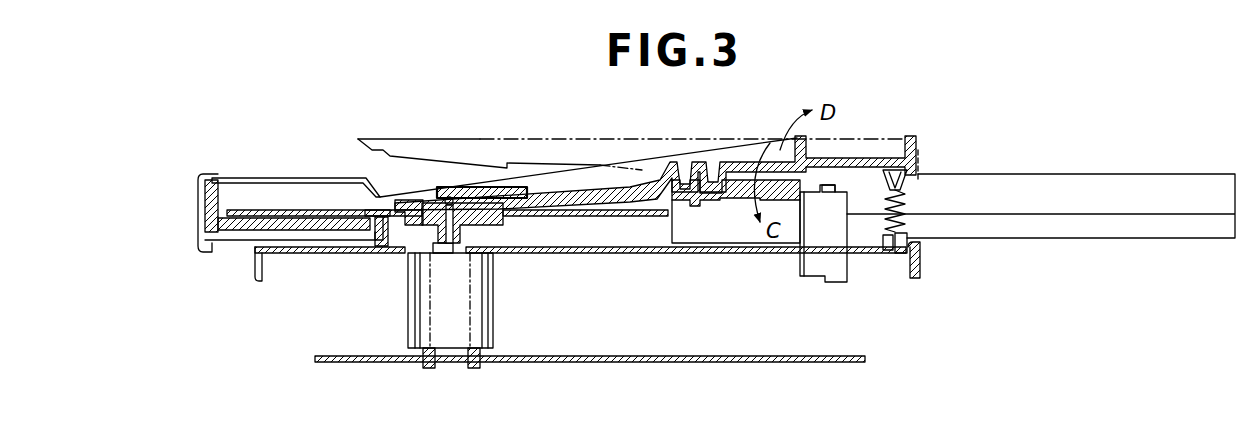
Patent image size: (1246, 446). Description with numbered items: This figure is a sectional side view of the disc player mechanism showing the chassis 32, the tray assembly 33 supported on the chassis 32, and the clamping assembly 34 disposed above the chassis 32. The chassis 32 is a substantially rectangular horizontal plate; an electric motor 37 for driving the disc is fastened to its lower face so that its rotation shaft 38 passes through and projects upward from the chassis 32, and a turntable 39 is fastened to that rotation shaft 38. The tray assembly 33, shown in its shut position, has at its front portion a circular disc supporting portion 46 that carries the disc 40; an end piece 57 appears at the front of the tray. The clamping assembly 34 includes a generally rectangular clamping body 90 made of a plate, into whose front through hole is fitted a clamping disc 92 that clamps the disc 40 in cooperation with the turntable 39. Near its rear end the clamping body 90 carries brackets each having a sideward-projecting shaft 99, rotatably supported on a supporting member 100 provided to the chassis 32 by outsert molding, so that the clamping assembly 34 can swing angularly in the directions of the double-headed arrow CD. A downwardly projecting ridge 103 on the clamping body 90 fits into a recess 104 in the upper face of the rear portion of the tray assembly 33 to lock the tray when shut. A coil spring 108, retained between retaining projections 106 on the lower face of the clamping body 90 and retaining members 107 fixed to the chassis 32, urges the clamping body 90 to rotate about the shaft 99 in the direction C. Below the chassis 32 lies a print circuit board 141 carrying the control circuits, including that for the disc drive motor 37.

The chassis 32 is at (336, 253).
The tray assembly 33 is at (251, 175).
The clamping assembly 34 is at (748, 136).
The electric motor 37 is at (492, 288).
The rotation shaft 38 is at (462, 228).
The turntable 39 is at (416, 218).
The disc 40 is at (312, 212).
The disc supporting portion 46 is at (274, 217).
The end cap 57 is at (200, 194).
The clamping body 90 is at (668, 160).
The clamping disc 92 is at (412, 203).
The shaft 99 is at (832, 196).
The supporting member 100 is at (800, 230).
The ridge 103 is at (715, 184).
The recess 104 is at (712, 188).
The retaining projections 106 is at (905, 173).
The retaining members 107 is at (917, 237).
The coil spring 108 is at (908, 208).
The print circuit board 141 is at (633, 355).